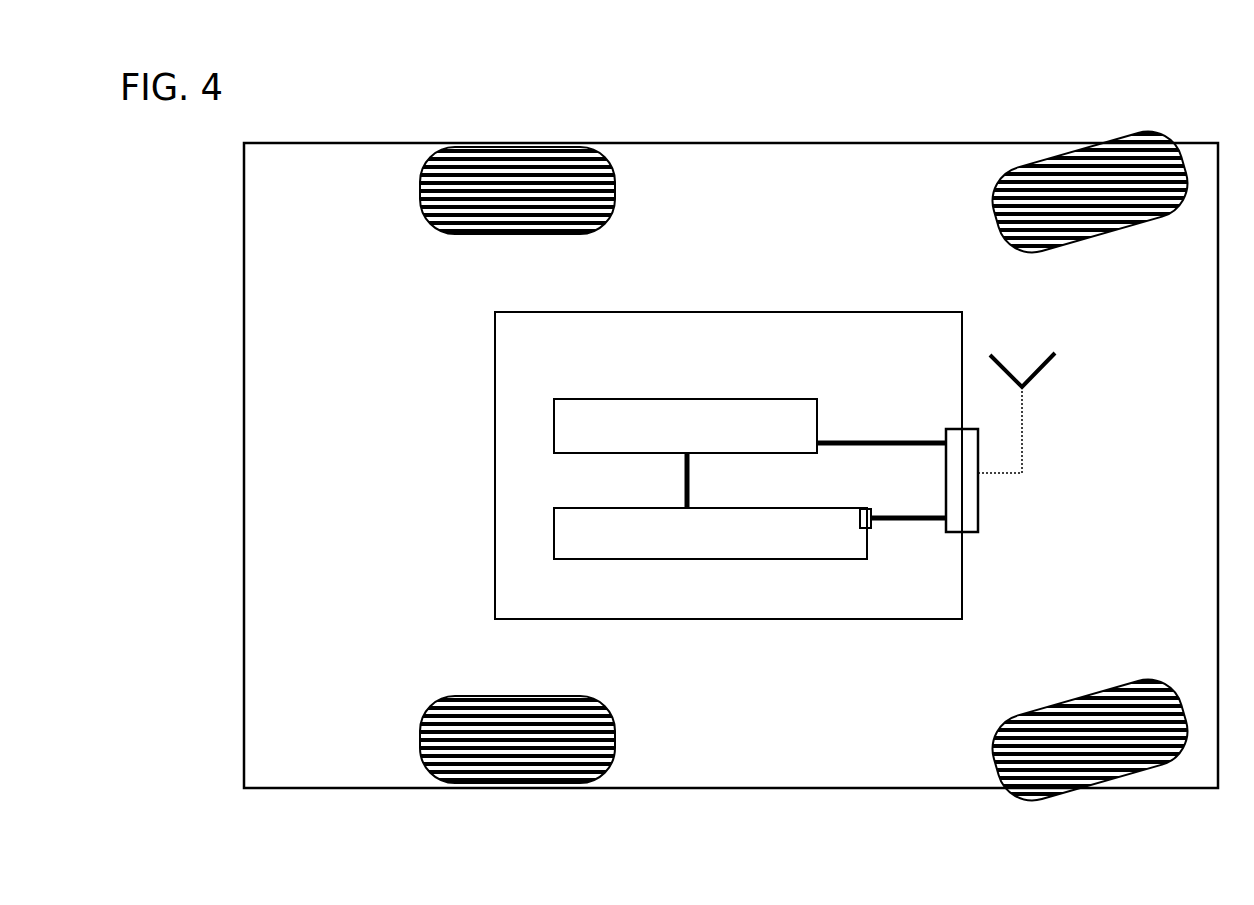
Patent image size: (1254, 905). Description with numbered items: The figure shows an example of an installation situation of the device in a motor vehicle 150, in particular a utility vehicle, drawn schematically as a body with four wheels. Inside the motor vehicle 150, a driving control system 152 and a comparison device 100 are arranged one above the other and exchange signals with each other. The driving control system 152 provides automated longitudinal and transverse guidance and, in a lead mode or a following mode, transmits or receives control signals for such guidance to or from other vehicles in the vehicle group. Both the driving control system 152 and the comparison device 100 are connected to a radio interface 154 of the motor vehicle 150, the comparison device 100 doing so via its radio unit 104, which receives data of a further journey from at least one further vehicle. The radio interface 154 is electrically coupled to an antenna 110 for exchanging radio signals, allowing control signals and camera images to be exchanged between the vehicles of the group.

The motor vehicle 150 is at (342, 214).
The comparison device 100 is at (565, 356).
The driving control system 152 is at (554, 425).
The radio interface 154 is at (978, 506).
The radio unit 104 is at (871, 528).
The antenna 110 is at (1025, 405).